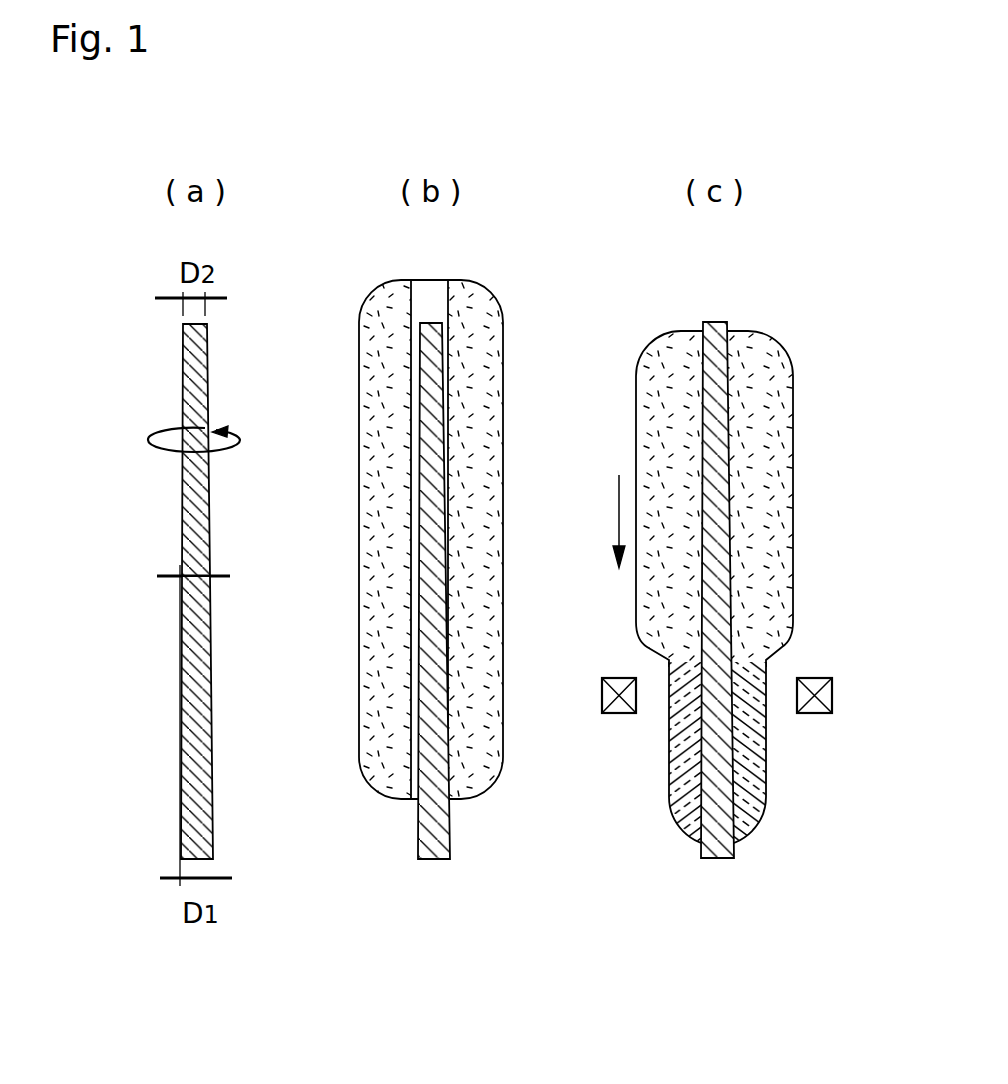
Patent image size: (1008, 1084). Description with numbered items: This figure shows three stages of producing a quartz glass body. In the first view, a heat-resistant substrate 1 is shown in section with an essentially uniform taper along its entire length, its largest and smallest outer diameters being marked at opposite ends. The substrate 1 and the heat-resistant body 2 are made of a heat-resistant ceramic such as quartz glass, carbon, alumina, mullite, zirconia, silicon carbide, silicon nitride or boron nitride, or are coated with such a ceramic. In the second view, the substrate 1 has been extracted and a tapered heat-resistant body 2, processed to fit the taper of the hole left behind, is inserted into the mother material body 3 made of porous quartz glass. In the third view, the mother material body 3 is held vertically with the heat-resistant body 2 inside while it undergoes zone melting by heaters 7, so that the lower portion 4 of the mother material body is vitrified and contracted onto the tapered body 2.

The heat-resistant substrate 1 is at (224, 450).
The heat-resistant body 2 is at (469, 563).
The porous body / molded material 3 is at (593, 514).
The compressed end portion 4 is at (749, 754).
The heaters 7 is at (721, 676).